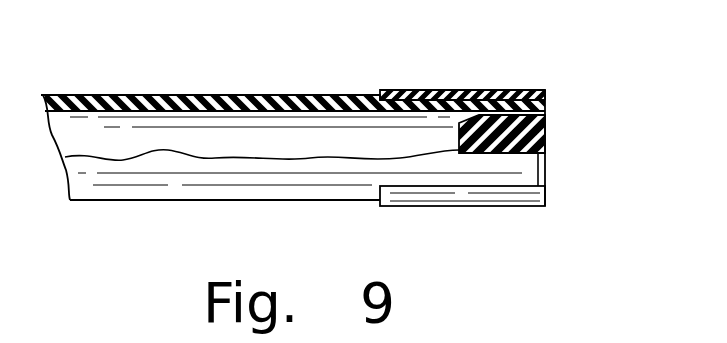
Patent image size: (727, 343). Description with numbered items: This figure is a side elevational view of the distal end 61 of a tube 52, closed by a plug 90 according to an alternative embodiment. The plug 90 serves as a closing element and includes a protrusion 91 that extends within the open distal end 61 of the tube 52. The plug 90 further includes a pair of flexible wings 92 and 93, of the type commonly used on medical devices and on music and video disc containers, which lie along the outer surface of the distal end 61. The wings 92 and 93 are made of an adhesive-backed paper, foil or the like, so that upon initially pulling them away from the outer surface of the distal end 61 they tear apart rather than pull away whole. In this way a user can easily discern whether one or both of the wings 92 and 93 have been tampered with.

The tube 52 is at (182, 95).
The distal end 61 is at (490, 102).
The plug 90 is at (550, 117).
The protrusion 91 is at (512, 148).
The flexible wing 92 is at (420, 90).
The flexible wing 93 is at (465, 194).